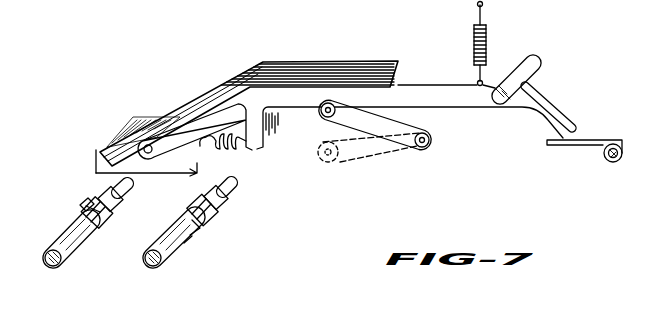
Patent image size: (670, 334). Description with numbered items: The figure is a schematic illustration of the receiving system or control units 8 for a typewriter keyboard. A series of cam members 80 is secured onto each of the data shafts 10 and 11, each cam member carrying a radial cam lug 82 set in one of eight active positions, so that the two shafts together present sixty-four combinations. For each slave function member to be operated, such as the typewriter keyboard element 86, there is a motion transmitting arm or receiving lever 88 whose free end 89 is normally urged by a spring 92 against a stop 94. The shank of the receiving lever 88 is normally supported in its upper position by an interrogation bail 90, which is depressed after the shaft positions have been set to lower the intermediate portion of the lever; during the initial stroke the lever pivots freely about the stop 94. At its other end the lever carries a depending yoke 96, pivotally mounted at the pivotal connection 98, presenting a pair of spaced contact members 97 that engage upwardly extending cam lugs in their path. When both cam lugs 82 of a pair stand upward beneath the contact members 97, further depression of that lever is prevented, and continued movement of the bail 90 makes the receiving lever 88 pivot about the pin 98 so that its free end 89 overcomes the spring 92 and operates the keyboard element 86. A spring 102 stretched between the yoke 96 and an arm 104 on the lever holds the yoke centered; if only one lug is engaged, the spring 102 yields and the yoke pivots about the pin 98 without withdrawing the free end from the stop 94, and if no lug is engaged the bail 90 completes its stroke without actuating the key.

The control units 8 is at (392, 52).
The data shaft 10 is at (48, 264).
The data shaft 11 is at (152, 267).
The cam member 80 is at (76, 218).
The radial cam lug 82 is at (88, 202).
The typewriter keyboard element 86 is at (577, 147).
The receiving lever 88 is at (458, 102).
The free end 89 is at (576, 124).
The interrogation bail 90 is at (380, 130).
The spring 92 is at (488, 46).
The stop 94 is at (541, 68).
The yoke 96 is at (98, 161).
The contact members 97 is at (190, 180).
The pivotal connection 98 is at (158, 135).
The spring 102 is at (232, 151).
The arm 104 is at (268, 146).